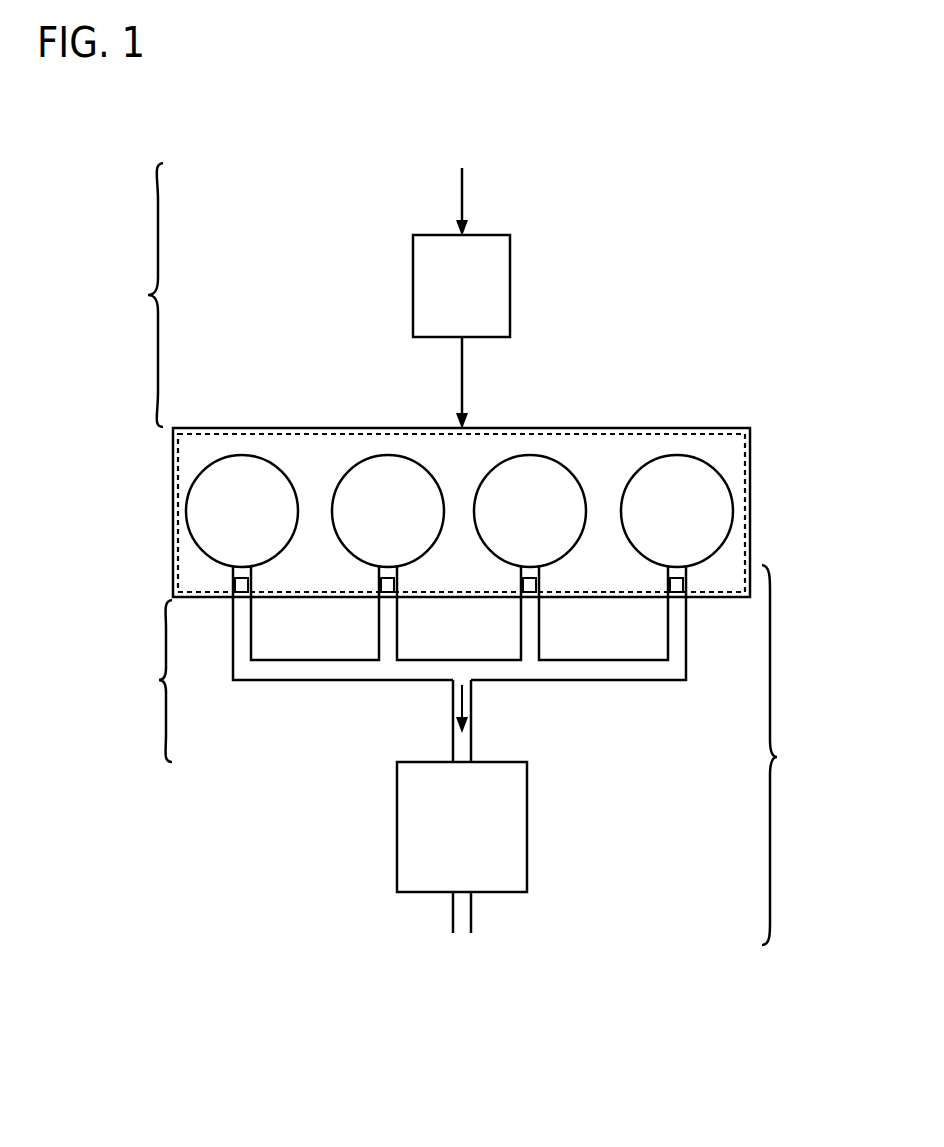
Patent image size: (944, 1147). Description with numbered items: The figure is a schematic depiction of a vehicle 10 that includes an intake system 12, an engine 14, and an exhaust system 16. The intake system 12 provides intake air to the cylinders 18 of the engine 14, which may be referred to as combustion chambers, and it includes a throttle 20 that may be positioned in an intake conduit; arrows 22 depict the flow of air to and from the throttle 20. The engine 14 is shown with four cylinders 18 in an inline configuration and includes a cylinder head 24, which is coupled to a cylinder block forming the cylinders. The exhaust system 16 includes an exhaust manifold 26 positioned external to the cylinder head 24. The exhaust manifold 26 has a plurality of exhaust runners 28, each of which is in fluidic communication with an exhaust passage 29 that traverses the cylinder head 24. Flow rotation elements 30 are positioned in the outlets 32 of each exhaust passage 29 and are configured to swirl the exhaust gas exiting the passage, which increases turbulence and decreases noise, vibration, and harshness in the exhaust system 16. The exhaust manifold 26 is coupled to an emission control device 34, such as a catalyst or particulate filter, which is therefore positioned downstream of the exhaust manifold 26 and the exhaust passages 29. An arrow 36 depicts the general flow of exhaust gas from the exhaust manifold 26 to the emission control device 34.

The vehicle 10 is at (846, 231).
The intake system 12 is at (142, 295).
The engine 14 is at (185, 428).
The exhaust system 16 is at (786, 755).
The cylinders 18 is at (284, 459).
The throttle 20 is at (461, 286).
The arrows 22 is at (463, 208).
The cylinder head 24 is at (177, 453).
The exhaust manifold 26 is at (152, 681).
The exhaust runners 28 is at (232, 648).
The exhaust passages 29 is at (253, 575).
The flow rotation elements 30 is at (235, 585).
The outlets 32 is at (248, 609).
The emission control device 34 is at (462, 847).
The arrow 36 is at (457, 711).